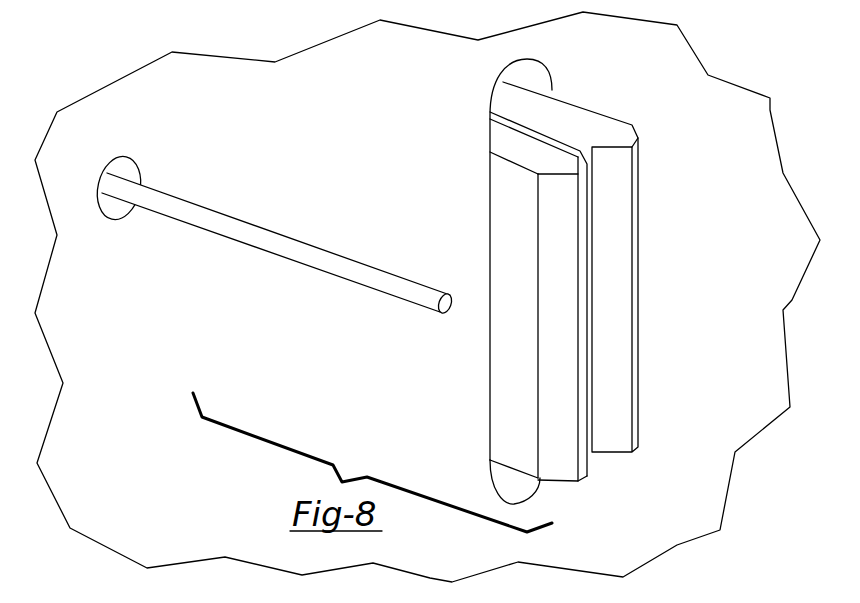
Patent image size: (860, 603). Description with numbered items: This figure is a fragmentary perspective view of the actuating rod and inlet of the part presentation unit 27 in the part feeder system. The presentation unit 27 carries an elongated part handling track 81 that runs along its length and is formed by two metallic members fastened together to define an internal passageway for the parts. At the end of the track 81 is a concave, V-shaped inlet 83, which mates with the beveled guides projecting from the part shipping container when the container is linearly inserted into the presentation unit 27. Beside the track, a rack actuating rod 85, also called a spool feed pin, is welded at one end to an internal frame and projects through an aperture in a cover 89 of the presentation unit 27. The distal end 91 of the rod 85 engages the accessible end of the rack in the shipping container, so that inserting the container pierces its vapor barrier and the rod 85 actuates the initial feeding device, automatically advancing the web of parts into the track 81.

The part presentation unit 27 is at (305, 353).
The part handling track 81 is at (513, 227).
The inlet 83 is at (615, 193).
The rack actuating rod 85 is at (227, 224).
The cover 89 is at (113, 298).
The distal end 91 is at (452, 304).